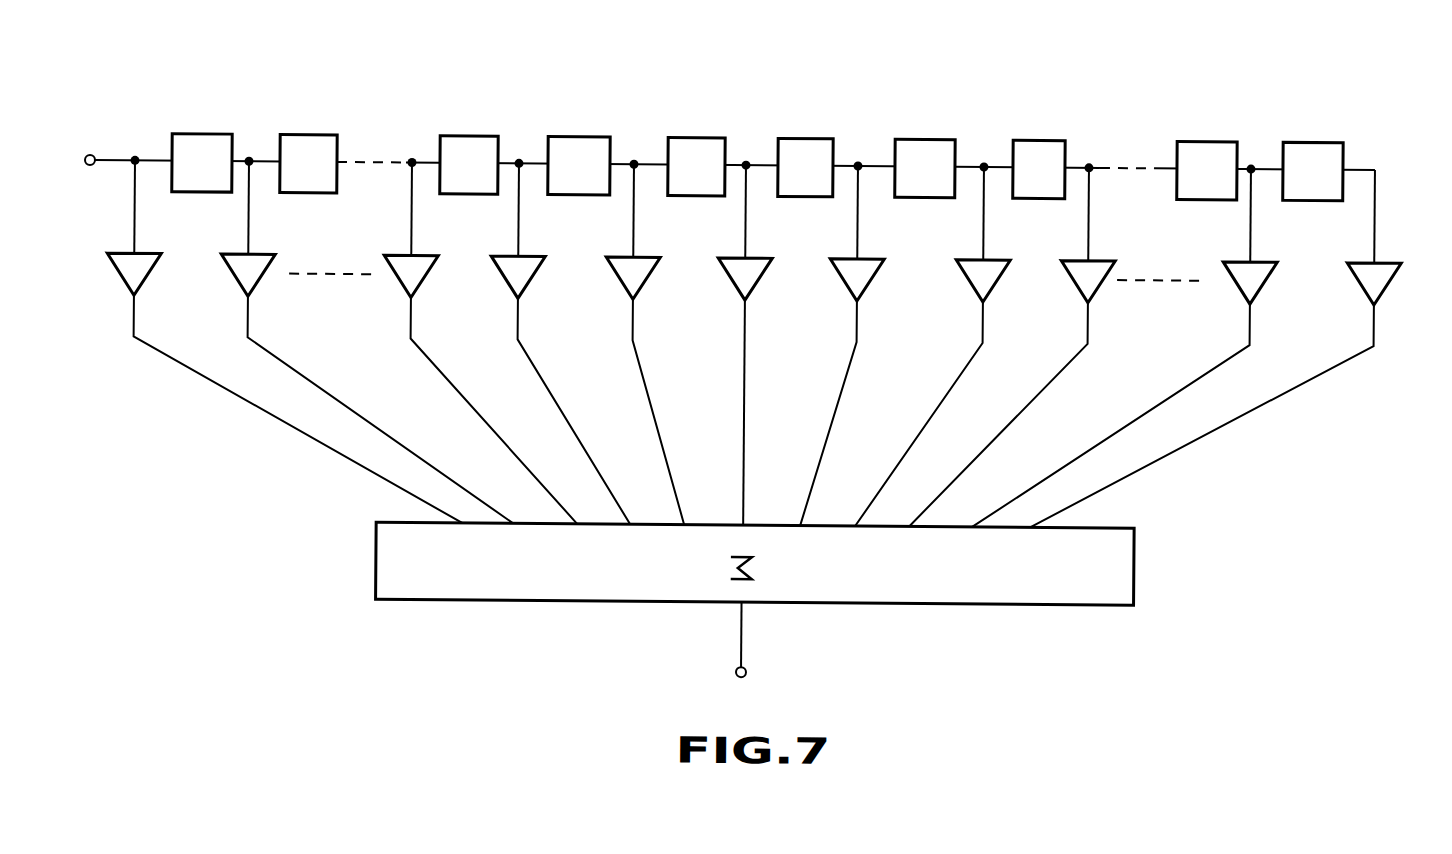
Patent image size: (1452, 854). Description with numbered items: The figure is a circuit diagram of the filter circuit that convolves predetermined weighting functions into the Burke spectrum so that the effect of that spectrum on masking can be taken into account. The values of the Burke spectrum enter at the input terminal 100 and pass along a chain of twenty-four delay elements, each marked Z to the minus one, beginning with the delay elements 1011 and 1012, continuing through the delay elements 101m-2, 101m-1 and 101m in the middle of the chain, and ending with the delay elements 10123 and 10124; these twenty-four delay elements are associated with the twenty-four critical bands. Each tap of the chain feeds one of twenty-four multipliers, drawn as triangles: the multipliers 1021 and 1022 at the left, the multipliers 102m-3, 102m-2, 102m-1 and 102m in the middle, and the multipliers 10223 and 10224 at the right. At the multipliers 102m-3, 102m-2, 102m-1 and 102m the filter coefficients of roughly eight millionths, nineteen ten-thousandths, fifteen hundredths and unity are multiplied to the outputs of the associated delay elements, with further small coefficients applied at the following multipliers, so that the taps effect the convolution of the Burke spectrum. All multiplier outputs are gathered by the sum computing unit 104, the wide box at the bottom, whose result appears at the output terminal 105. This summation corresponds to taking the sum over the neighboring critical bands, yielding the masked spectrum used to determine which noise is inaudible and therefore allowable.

The input terminal 100 is at (92, 153).
The delay element 1011 is at (200, 133).
The delay element 1012 is at (307, 133).
The delay element 101m-2 is at (473, 133).
The delay element 101m-1 is at (581, 133).
The delay element 101m is at (695, 133).
The delay element 10123 is at (1206, 133).
The delay element 10124 is at (1314, 133).
The multiplier 1021 is at (149, 272).
The multiplier 1022 is at (263, 272).
The multiplier 102m-3 is at (426, 272).
The multiplier 102m-2 is at (533, 272).
The multiplier 102m-1 is at (648, 272).
The multiplier 102m is at (760, 272).
The multiplier 10223 is at (1265, 272).
The multiplier 10224 is at (1389, 272).
The sum computing unit 104 is at (1137, 570).
The output terminal 105 is at (750, 668).